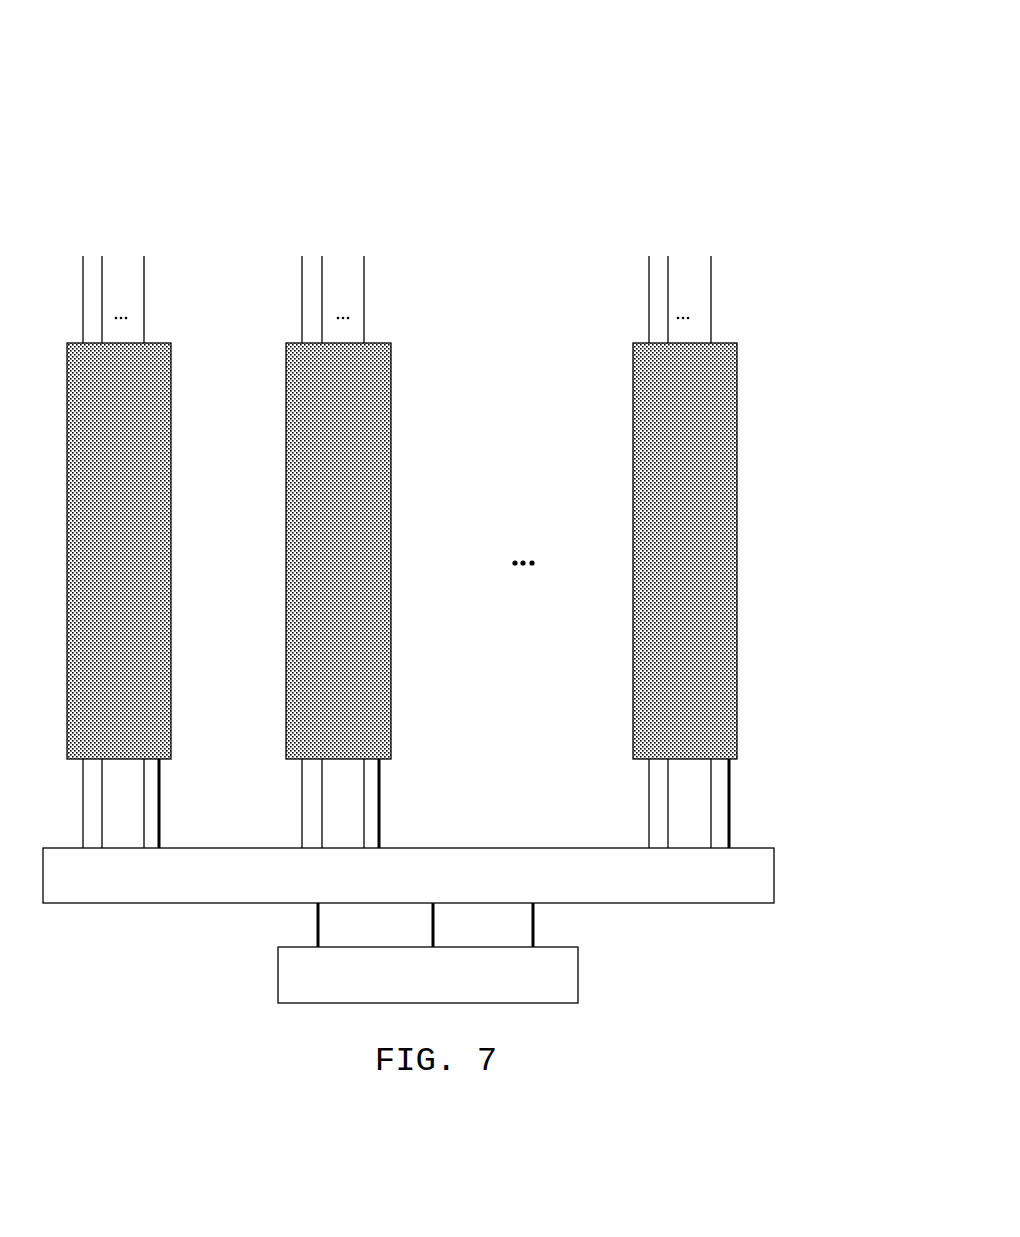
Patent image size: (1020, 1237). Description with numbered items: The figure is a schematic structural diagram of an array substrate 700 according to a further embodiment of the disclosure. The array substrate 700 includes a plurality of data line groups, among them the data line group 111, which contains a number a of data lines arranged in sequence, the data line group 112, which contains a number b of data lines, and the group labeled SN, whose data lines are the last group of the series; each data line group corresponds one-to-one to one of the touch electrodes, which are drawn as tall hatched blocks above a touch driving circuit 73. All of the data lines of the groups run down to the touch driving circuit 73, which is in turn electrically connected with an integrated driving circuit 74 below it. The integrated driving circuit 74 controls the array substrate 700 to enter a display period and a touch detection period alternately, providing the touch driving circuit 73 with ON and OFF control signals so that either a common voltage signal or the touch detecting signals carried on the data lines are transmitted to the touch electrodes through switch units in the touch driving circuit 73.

The array substrate 700 is at (744, 96).
The data line group 111 is at (78, 222).
The data line group 112 is at (300, 222).
The Nth sensing electrode group SN is at (712, 222).
The touch driving circuit 73 is at (774, 883).
The integrated driving circuit 74 is at (578, 983).